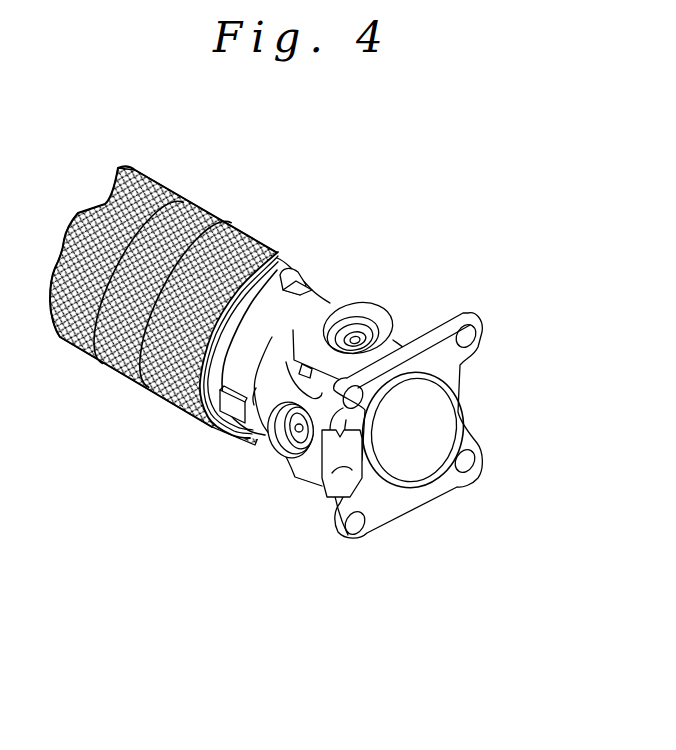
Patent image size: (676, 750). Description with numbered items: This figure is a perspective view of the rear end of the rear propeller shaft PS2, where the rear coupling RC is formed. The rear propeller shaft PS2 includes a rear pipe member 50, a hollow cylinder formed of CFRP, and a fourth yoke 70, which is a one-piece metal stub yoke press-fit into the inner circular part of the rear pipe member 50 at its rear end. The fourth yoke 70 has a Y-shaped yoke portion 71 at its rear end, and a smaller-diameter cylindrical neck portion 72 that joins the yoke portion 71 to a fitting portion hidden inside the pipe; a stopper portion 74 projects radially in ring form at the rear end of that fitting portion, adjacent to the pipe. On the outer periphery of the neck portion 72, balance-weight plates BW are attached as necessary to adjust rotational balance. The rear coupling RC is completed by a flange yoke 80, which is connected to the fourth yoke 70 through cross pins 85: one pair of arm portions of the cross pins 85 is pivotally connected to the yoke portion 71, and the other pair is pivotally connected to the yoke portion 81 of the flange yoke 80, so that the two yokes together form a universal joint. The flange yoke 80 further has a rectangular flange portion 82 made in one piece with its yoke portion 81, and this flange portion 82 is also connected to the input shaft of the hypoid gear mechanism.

The rear propeller shaft PS2 is at (343, 170).
The rear pipe member 50 is at (88, 340).
The stopper portion 74 is at (228, 392).
The balance-weight plates BW is at (290, 290).
The neck portion 72 is at (297, 322).
The cross pins 85 is at (277, 447).
The fourth yoke 70 is at (495, 272).
The yoke portion 71 is at (390, 330).
The yoke portion 81 is at (295, 462).
The flange portion 82 is at (348, 543).
The flange yoke 80 is at (337, 613).
The rear coupling RC is at (203, 538).